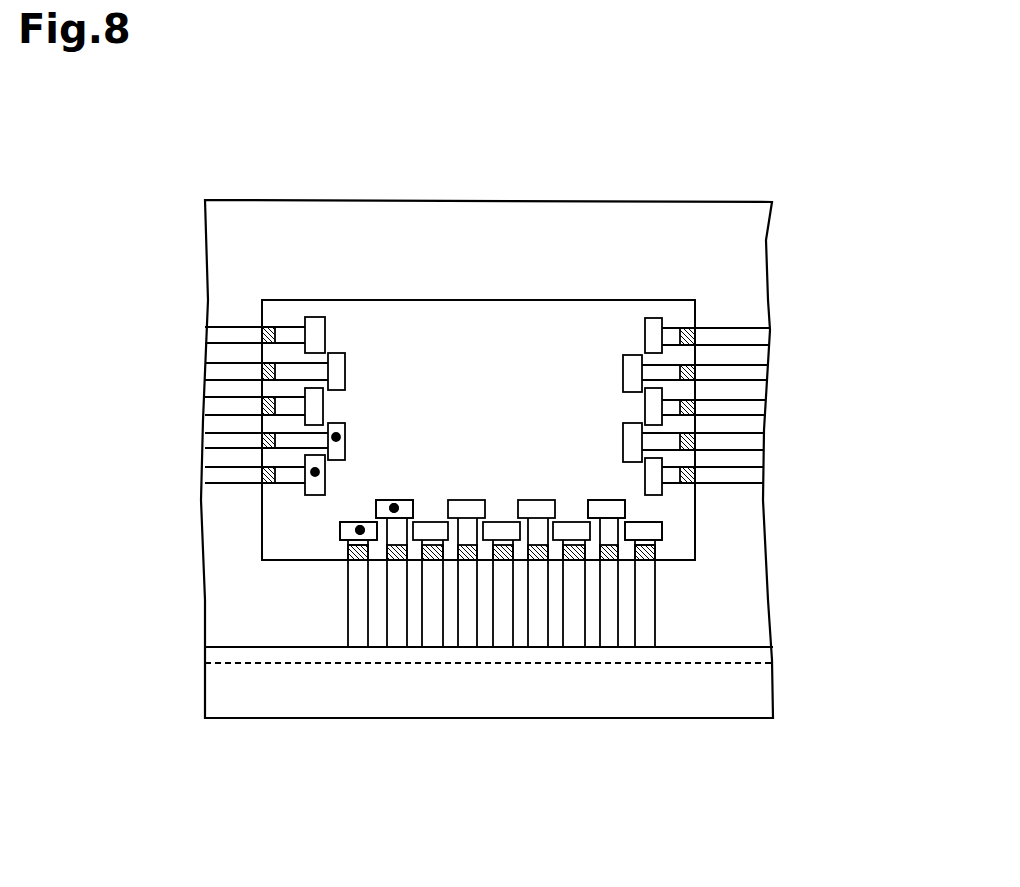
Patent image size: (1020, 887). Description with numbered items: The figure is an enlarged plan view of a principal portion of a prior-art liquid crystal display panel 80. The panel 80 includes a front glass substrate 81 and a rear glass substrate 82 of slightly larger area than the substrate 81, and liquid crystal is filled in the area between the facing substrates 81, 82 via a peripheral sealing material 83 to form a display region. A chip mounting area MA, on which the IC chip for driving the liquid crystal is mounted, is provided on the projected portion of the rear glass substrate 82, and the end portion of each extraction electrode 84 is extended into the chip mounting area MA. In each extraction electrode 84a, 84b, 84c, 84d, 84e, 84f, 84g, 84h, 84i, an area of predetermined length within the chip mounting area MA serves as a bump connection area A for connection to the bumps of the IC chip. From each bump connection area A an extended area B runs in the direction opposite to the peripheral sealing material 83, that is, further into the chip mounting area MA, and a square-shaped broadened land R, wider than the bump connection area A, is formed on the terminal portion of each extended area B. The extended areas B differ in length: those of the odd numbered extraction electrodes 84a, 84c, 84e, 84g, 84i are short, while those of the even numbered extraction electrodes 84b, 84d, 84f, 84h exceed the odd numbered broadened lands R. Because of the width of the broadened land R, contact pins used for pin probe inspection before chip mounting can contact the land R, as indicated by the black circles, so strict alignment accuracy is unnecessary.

The liquid crystal display panel 80 is at (362, 185).
The front glass substrate 81 is at (777, 693).
The rear glass substrate 82 is at (767, 513).
The peripheral sealing material 83 is at (780, 657).
The extraction electrode 84 is at (236, 312).
The extraction electrode 84a is at (645, 647).
The extraction electrode 84b is at (609, 647).
The extraction electrode 84c is at (574, 647).
The extraction electrode 84d is at (538, 647).
The extraction electrode 84e is at (503, 647).
The extraction electrode 84f is at (468, 647).
The extraction electrode 84g is at (432, 647).
The extraction electrode 84h is at (397, 647).
The extraction electrode 84i is at (358, 647).
The chip mounting area MA is at (423, 318).
The broadened land R is at (340, 527).
The extended area B is at (338, 546).
The bump connection area A is at (352, 552).